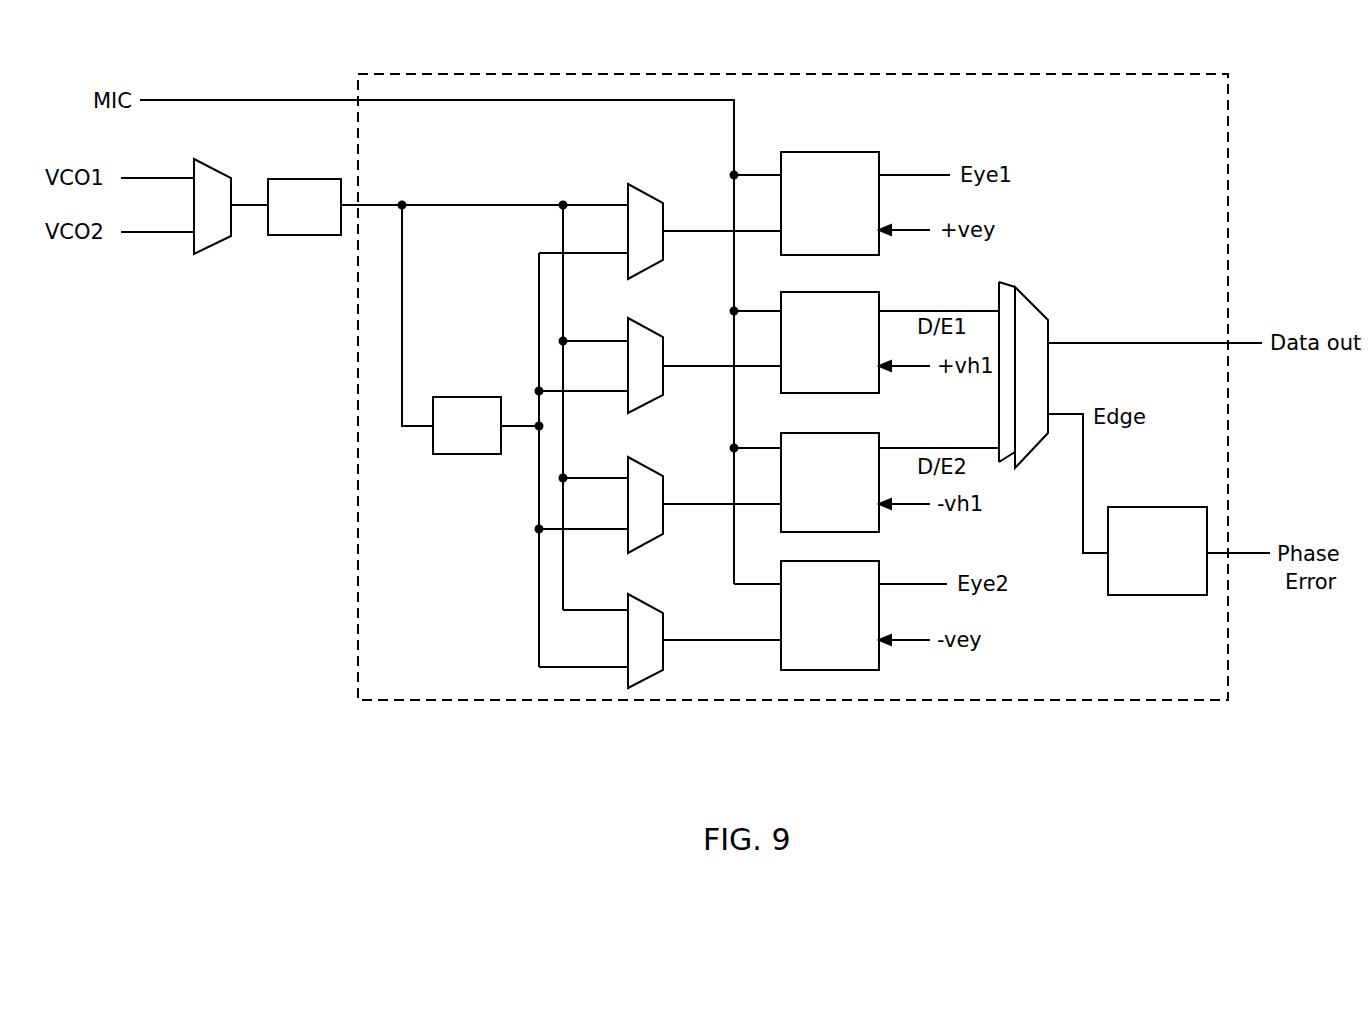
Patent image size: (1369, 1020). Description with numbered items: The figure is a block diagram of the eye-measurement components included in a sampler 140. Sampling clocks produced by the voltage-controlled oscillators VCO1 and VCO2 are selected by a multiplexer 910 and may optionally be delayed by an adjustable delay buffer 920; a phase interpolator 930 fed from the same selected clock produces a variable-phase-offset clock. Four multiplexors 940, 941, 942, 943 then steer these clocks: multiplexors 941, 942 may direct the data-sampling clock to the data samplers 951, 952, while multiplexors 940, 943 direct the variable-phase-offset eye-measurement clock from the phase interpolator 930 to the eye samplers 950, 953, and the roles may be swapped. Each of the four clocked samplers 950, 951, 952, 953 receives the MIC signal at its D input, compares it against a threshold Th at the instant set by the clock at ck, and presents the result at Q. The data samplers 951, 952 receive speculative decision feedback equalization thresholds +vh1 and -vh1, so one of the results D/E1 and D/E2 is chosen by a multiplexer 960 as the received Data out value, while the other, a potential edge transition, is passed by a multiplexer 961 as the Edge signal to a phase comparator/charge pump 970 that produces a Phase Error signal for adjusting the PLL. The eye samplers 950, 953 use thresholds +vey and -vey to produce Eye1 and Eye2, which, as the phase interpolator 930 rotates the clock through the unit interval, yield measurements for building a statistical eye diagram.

The sampler 140 is at (525, 74).
The multiplexer 910 is at (217, 168).
The adjustable delay buffer 920 is at (308, 179).
The phase interpolator 930 is at (480, 397).
The multiplexor 940 is at (649, 195).
The multiplexor 941 is at (650, 330).
The multiplexor 942 is at (651, 469).
The multiplexor 943 is at (651, 607).
The clocked sampler 950 is at (827, 152).
The clocked sampler 951 is at (827, 292).
The clocked sampler 952 is at (829, 433).
The clocked sampler 953 is at (831, 561).
The multiplexer 960 is at (1040, 275).
The multiplexer 961 is at (1013, 361).
The phase comparator/charge pump 970 is at (1158, 507).